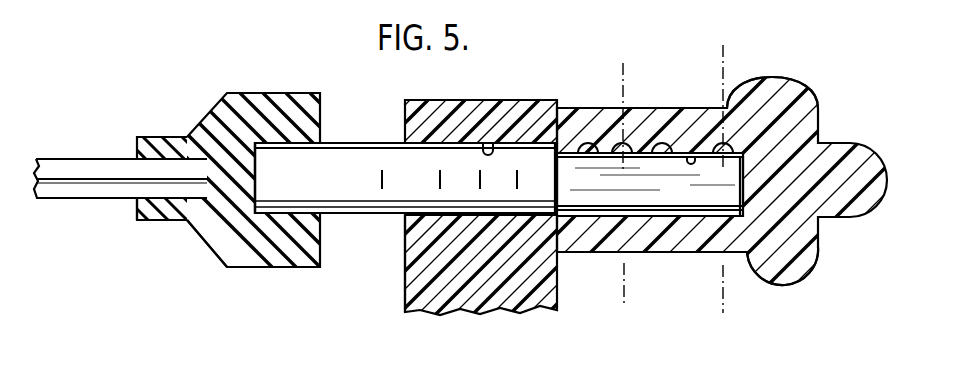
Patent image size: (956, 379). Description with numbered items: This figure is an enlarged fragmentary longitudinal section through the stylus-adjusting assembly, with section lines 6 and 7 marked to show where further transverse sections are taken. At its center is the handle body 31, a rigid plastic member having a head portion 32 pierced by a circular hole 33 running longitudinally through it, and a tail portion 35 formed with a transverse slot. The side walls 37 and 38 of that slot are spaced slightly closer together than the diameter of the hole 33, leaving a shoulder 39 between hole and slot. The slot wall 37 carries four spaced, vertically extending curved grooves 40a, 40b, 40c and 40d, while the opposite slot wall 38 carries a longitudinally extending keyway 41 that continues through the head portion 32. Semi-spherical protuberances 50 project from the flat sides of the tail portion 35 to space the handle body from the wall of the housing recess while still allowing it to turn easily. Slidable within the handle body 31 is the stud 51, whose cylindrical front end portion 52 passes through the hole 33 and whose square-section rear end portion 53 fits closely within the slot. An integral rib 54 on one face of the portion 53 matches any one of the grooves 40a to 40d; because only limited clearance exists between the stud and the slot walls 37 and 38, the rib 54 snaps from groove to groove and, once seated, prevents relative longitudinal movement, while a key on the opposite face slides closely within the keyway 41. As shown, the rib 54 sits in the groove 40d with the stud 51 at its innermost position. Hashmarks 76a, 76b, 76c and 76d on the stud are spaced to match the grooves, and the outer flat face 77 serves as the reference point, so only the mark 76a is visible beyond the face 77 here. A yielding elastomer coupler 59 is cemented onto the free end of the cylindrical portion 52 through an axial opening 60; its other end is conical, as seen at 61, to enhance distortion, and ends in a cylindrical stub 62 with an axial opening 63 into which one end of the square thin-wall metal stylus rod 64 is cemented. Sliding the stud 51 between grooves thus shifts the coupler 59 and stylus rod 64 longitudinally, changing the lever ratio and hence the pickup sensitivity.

The handle body 31 is at (542, 65).
The head portion 32 is at (406, 92).
The circular hole 33 is at (488, 143).
The tail portion 35 is at (599, 262).
The slot wall 37 is at (691, 156).
The slot wall 38 is at (677, 206).
The shoulder 39 is at (560, 143).
The curved groove 40a is at (587, 142).
The curved groove 40b is at (613, 142).
The curved groove 40c is at (658, 143).
The curved groove 40d is at (727, 142).
The keyway 41 is at (580, 214).
The semi-spherical protuberances 50 is at (809, 95).
The stud 51 is at (357, 141).
The cylindrical front end portion 52 is at (368, 216).
The rear end portion 53 is at (572, 177).
The rib 54 is at (730, 150).
The coupler 59 is at (226, 93).
The axial opening 60 is at (288, 152).
The conical end 61 is at (207, 246).
The cylindrical stub 62 is at (137, 219).
The axial opening 63 is at (176, 194).
The stylus rod 64 is at (82, 190).
The hashmark 76a is at (381, 178).
The hashmark 76b is at (438, 179).
The hashmark 76c is at (478, 179).
The hashmark 76d is at (542, 166).
The outer flat face 77 is at (405, 296).
The section line 6- 6 is at (731, 57).
The section line 7- 7 is at (632, 77).